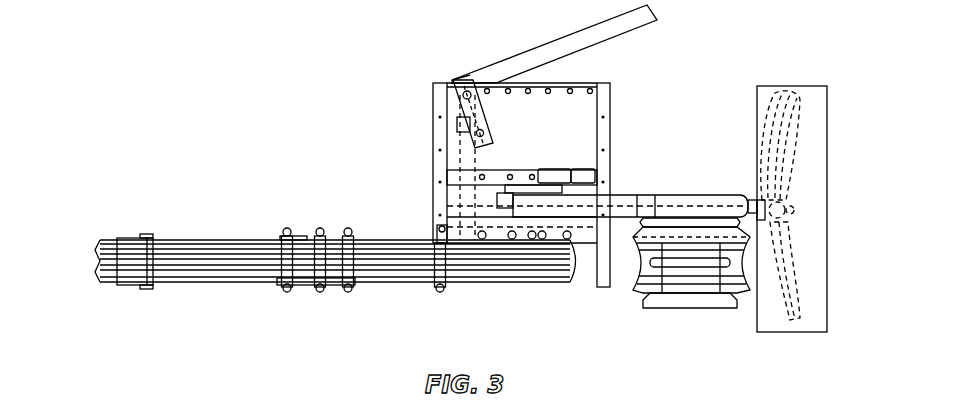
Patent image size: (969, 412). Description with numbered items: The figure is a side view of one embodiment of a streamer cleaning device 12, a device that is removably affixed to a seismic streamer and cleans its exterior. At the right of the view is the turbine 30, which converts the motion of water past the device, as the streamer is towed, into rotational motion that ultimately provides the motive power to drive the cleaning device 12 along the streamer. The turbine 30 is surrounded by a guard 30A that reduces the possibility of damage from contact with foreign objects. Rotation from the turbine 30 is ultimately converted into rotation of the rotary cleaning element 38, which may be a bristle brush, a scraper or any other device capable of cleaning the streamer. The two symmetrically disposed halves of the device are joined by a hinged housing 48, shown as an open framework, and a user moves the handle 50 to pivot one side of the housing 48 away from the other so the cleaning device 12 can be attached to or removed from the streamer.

The streamer cleaning device 12 is at (258, 320).
The turbine 30 is at (797, 125).
The guard 30A is at (777, 332).
The rotary cleaning element 38 is at (633, 290).
The hinged housing 48 is at (433, 82).
The handle 50 is at (560, 38).